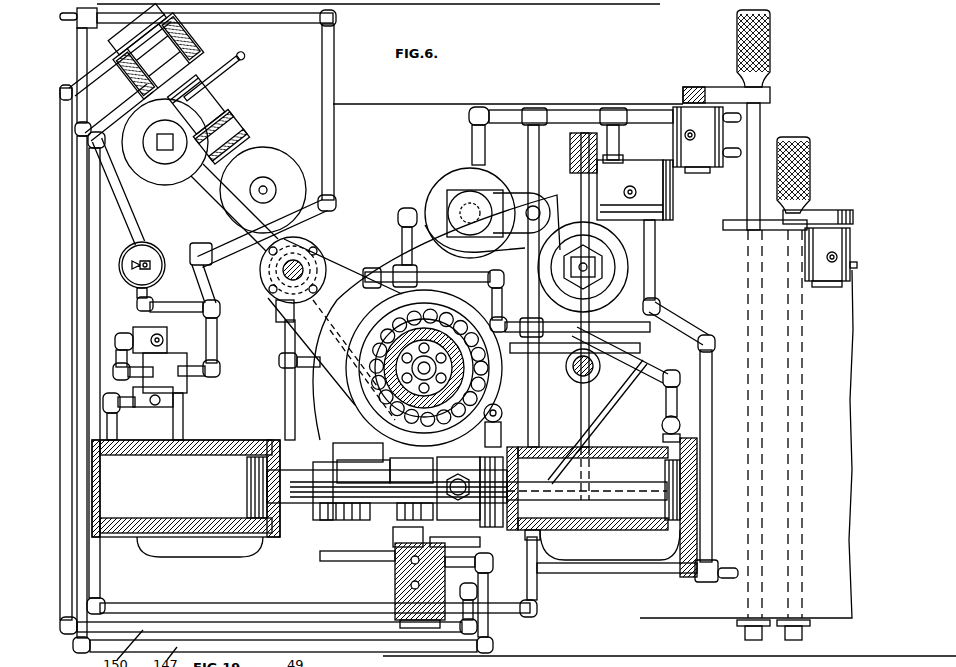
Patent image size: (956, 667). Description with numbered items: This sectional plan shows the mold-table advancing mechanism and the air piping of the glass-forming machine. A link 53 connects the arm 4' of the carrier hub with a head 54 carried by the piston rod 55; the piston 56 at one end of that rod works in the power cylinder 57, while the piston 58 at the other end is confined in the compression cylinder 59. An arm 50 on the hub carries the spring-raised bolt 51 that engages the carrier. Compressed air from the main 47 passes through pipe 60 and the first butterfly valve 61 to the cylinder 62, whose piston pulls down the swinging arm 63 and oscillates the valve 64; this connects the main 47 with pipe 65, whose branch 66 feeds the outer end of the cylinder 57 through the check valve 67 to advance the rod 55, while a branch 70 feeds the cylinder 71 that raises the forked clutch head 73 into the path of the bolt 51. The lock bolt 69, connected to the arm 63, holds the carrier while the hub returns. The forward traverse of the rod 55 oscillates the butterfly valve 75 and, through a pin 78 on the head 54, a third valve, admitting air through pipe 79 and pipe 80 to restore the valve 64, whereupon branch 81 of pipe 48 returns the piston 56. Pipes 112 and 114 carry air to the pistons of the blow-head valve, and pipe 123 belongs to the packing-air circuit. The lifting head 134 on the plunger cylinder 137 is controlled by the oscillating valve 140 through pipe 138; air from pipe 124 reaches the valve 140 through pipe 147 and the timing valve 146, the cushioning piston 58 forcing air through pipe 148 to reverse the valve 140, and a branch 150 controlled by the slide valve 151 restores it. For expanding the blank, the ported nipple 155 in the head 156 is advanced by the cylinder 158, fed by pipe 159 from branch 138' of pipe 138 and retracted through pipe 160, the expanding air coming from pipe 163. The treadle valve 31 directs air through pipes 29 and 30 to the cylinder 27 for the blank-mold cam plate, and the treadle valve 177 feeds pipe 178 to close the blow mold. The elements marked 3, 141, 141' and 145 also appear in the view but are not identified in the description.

The bearing 3 is at (380, 390).
The arm of hub 4' is at (571, 380).
The cylinder 27 is at (395, 597).
The pipe 29 is at (440, 368).
The pipe 30 is at (742, 117).
The treadle valve 31 is at (698, 93).
The compressed air main 47 is at (446, 358).
The pipe 48 is at (287, 403).
The arm 50 is at (324, 255).
The spring-raised bolt 51 is at (312, 242).
The link 53 is at (445, 476).
The head 54 is at (478, 523).
The piston rod 55 is at (607, 487).
The piston 56 is at (665, 507).
The power cylinder 57 is at (653, 533).
The piston 58 is at (253, 480).
The compression cylinder 59 is at (160, 522).
The pipe 60 is at (370, 387).
The first butterfly valve 61 is at (397, 505).
The cylinder 62 is at (628, 251).
The swinging arm 63 is at (602, 400).
The valve 64 is at (621, 176).
The pipe 65 is at (620, 150).
The branch 66 is at (532, 155).
The check valve 67 is at (662, 423).
The lock bolt 69 is at (566, 366).
The branch 70 is at (472, 133).
The cylinder 71 is at (452, 176).
The forked clutch head 73 is at (450, 192).
The butterfly valve 75 is at (315, 520).
The pin 78 is at (488, 583).
The pipe 79 is at (720, 582).
The pipe 80 is at (712, 381).
The branch 81 is at (539, 432).
The pipe 112 is at (358, 443).
The pipe 114 is at (430, 350).
The pipe 123 is at (377, 343).
The pipe 124 is at (395, 318).
The lifting head 134 is at (272, 150).
The cylinder 137 is at (333, 170).
The pipe 138 is at (185, 291).
The branch 138' is at (278, 486).
The oscillating valve 140 is at (187, 385).
The arm 141 is at (231, 207).
The ring 141' is at (165, 142).
The gauge 145 is at (157, 233).
The timing valve 146 is at (128, 278).
The pipe 147 is at (220, 368).
The pipe 148 is at (143, 420).
The branch 150 is at (322, 78).
The slide valve 151 is at (336, 212).
The ported nipple 155 is at (235, 130).
The head 156 is at (213, 100).
The cylinder 158 is at (172, 52).
The pipe 159 is at (103, 58).
The pipe 160 is at (267, 607).
The pipe 163 is at (226, 84).
The treadle valve 177 is at (823, 215).
The pipe 178 is at (840, 293).